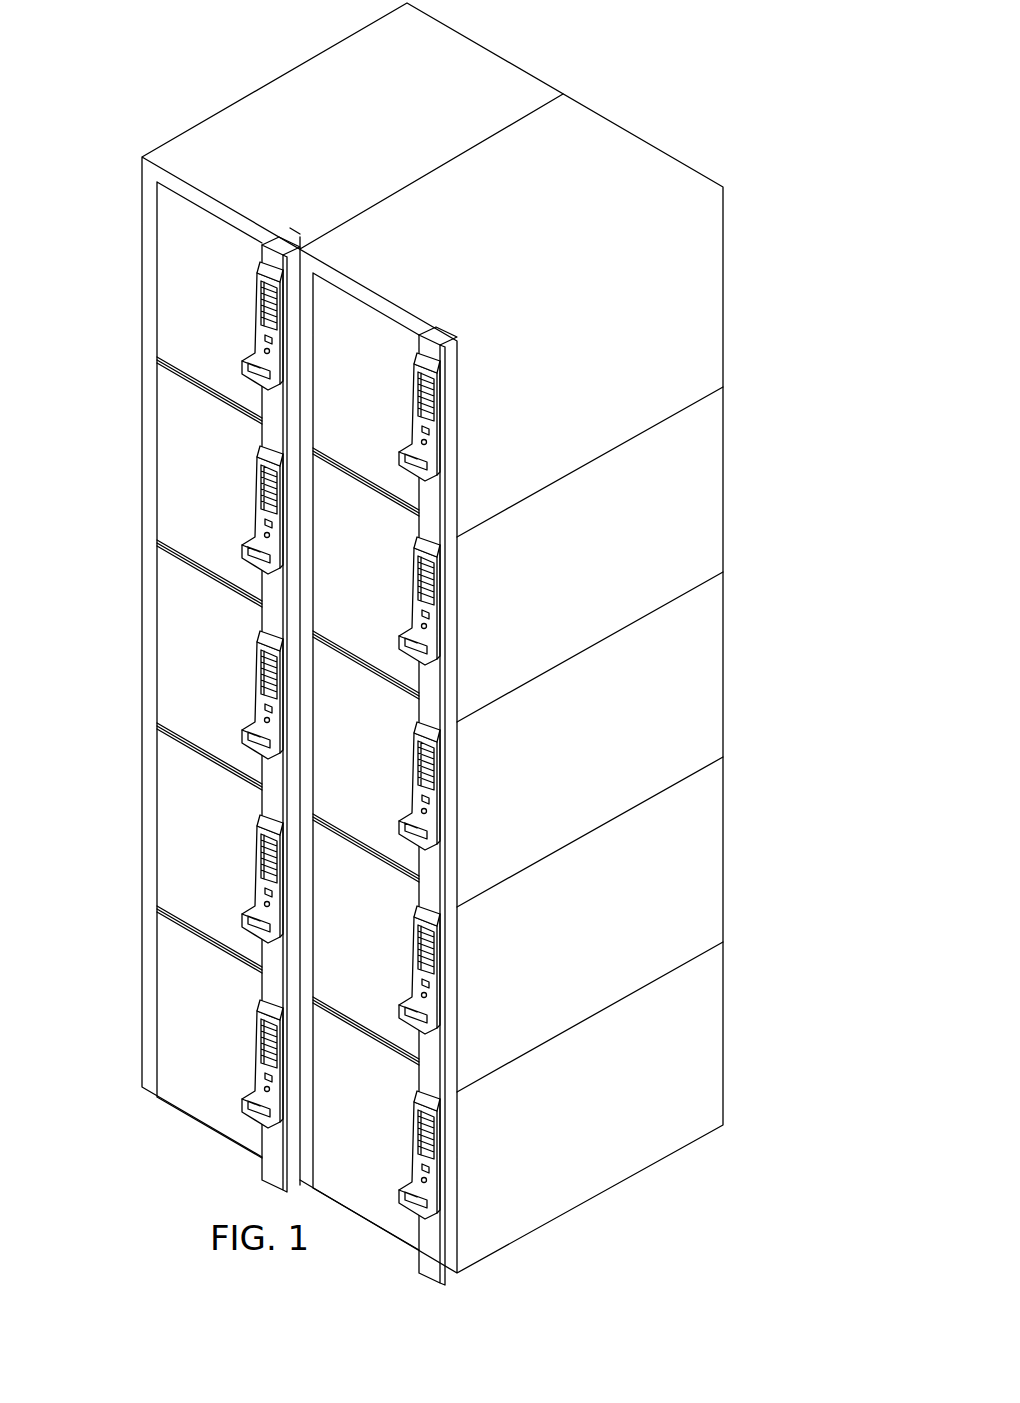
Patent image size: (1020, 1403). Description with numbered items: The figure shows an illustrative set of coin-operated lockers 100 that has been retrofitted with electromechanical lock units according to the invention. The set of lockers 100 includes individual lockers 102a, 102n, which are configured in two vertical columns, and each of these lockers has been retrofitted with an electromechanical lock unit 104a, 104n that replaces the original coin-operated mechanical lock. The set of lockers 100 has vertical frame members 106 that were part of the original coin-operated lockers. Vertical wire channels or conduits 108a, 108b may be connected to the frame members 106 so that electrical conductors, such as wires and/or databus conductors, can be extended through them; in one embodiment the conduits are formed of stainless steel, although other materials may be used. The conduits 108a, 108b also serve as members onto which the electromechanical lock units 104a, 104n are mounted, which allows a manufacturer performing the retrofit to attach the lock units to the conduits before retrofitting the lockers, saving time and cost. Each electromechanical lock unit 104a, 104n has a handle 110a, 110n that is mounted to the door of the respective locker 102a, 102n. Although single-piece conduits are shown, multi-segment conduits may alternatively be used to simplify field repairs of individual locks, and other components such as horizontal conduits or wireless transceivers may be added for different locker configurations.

The set of coin-operated lockers 100 is at (761, 59).
The locker 102a is at (170, 232).
The locker 102n is at (352, 1041).
The electromechanical lock unit 104a is at (293, 331).
The electromechanical lock unit 104n is at (450, 1160).
The vertical frame member 106 is at (300, 237).
The vertical wire channel or conduit 108a is at (275, 230).
The vertical wire channel or conduit 108b is at (434, 318).
The handle 110a is at (256, 318).
The handle 110n is at (412, 1150).